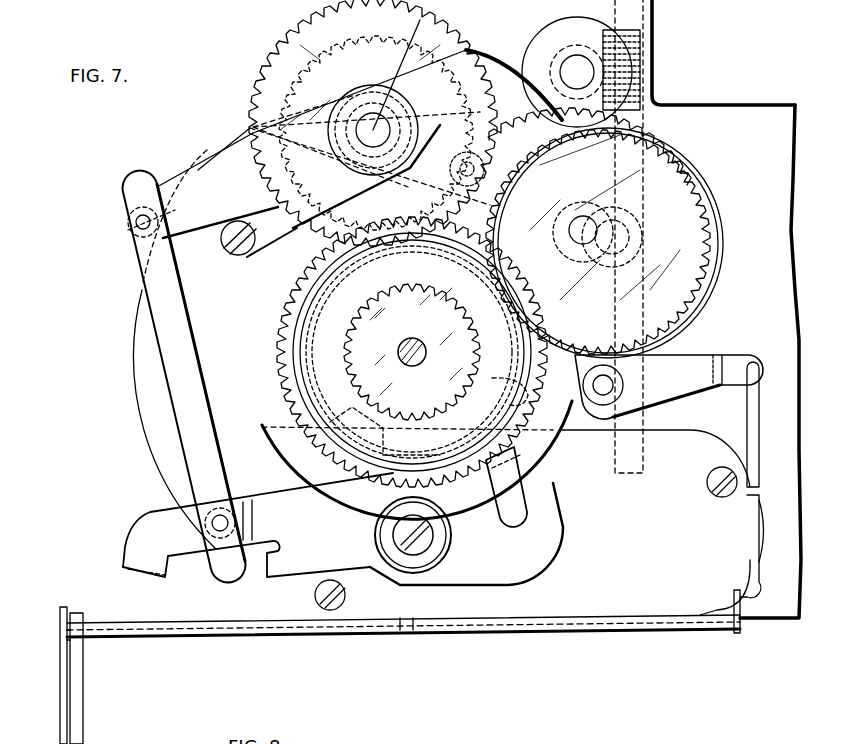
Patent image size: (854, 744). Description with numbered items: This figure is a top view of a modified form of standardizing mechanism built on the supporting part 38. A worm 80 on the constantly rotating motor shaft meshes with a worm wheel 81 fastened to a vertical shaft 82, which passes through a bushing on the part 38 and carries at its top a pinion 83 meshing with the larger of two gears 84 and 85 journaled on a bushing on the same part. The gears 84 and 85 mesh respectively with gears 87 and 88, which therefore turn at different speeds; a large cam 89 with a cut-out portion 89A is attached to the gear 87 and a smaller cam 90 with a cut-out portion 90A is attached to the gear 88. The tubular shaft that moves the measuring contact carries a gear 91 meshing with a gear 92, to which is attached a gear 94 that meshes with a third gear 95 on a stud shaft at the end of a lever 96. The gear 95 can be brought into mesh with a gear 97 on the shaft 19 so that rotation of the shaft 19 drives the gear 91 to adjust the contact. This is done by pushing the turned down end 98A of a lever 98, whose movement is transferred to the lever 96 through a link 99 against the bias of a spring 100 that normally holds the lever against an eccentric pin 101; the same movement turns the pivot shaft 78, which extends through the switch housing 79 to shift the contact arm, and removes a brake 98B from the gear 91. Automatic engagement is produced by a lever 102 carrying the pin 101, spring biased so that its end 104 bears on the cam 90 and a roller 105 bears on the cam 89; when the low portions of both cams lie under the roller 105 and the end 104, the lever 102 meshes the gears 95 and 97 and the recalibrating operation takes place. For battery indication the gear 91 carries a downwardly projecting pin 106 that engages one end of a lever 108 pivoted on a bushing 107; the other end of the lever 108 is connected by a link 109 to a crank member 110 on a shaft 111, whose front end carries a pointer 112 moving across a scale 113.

The shaft 19 is at (412, 340).
The part 38 is at (141, 421).
The pivot 78 is at (405, 535).
The switch housing 79 is at (703, 440).
The worm 80 is at (655, 58).
The worm wheel 81 is at (548, 60).
The vertical shaft 82 is at (577, 72).
The pinion 83 is at (540, 40).
The gear 84 is at (694, 158).
The gear 85 is at (721, 196).
The gear 87 is at (284, 305).
The gear 88 is at (294, 336).
The large cam 89 is at (275, 398).
The cut-out portion 89A is at (376, 292).
The smaller cam 90 is at (303, 362).
The cut-out portion 90A is at (338, 410).
The gear 91 is at (290, 416).
The gear 92 is at (292, 40).
The gear 94 is at (258, 70).
The gear 95 is at (703, 243).
The lever 96 is at (213, 168).
The gear 97 is at (346, 338).
The lever 98 is at (313, 557).
The turned down end 98A is at (132, 571).
The brake 98B is at (546, 462).
The link 99 is at (143, 265).
The spring 100 is at (246, 124).
The eccentric pin 101 is at (222, 243).
The lever 102 is at (258, 257).
The end 104 is at (560, 262).
The roller 105 is at (488, 130).
The pin 106 is at (500, 392).
The bushing 107 is at (612, 390).
The lever 108 is at (705, 355).
The link 109 is at (760, 438).
The crank member 110 is at (742, 632).
The shaft 111 is at (607, 613).
The pointer 112 is at (62, 690).
The scale 113 is at (82, 698).